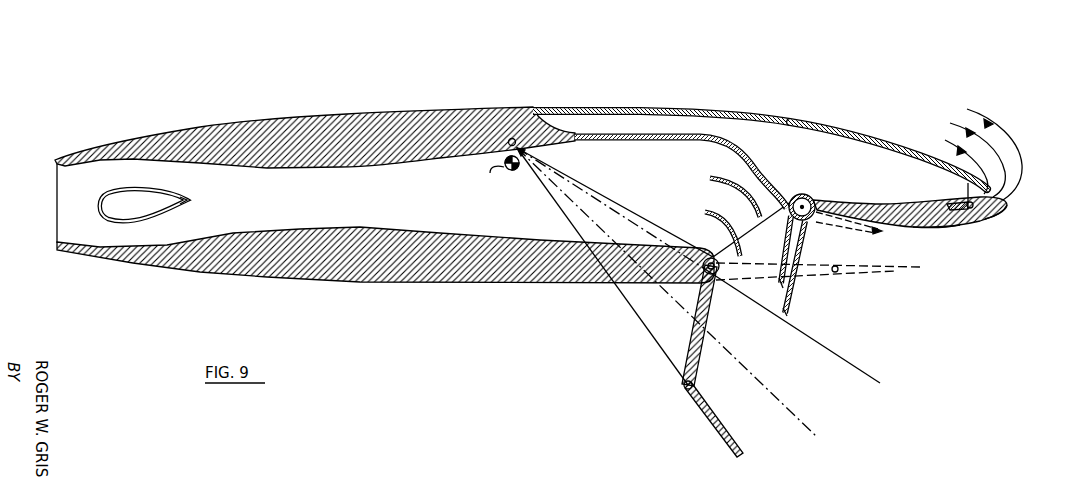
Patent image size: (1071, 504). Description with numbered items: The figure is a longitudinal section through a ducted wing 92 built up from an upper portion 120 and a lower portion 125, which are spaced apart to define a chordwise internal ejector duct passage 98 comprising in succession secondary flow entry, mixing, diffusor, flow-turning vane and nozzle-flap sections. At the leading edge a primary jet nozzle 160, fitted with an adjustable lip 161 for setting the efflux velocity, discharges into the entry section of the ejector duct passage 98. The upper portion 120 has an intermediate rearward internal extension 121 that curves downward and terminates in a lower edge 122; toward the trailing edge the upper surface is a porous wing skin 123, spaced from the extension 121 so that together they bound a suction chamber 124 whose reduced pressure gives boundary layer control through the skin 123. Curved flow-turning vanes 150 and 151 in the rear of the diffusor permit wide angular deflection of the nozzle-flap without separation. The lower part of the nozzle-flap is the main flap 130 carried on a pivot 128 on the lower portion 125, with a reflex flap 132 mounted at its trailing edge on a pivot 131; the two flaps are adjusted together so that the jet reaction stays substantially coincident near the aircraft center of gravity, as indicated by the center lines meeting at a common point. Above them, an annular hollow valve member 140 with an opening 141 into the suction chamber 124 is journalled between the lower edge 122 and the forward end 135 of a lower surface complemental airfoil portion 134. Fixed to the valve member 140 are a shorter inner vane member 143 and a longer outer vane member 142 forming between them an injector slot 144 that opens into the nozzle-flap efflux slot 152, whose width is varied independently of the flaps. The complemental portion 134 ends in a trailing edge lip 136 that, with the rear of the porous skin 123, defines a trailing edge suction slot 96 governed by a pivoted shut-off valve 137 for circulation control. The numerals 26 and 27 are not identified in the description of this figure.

The ducted wing 92 is at (258, 126).
The upper portion 120 is at (430, 113).
The porous wing skin 123 is at (768, 112).
The suction chamber 124 is at (818, 147).
The internal extension 121 is at (778, 156).
The lower edge 122 is at (777, 190).
The annular hollow valve member 140 is at (800, 194).
The opening 141 is at (813, 197).
The outer vane member 142 is at (803, 242).
The forward end of complemental lower portion 135 is at (840, 200).
The shut-off valve 137 is at (950, 203).
The trailing edge suction slot 96 is at (1005, 170).
The lower surface complemental airfoil portion 134 is at (945, 229).
The trailing edge lip 136 is at (994, 223).
The flow-turning vane 151 is at (740, 199).
The flow-turning vane 150 is at (730, 234).
The injector slot 144 is at (786, 313).
The nozzle-flap efflux slot 152 is at (907, 247).
The inner vane member 143 is at (768, 282).
The pivot 128 is at (700, 282).
The main flap 130 is at (690, 348).
The pivot 131 is at (680, 387).
The reflex flap 132 is at (705, 425).
The lower portion 125 is at (412, 278).
The ejector duct passage 98 is at (456, 173).
The adjustable lip 161 is at (200, 200).
The jet nozzle 160 is at (197, 203).
The inlet upper lip 26 is at (85, 180).
The inlet lower lip 27 is at (100, 213).